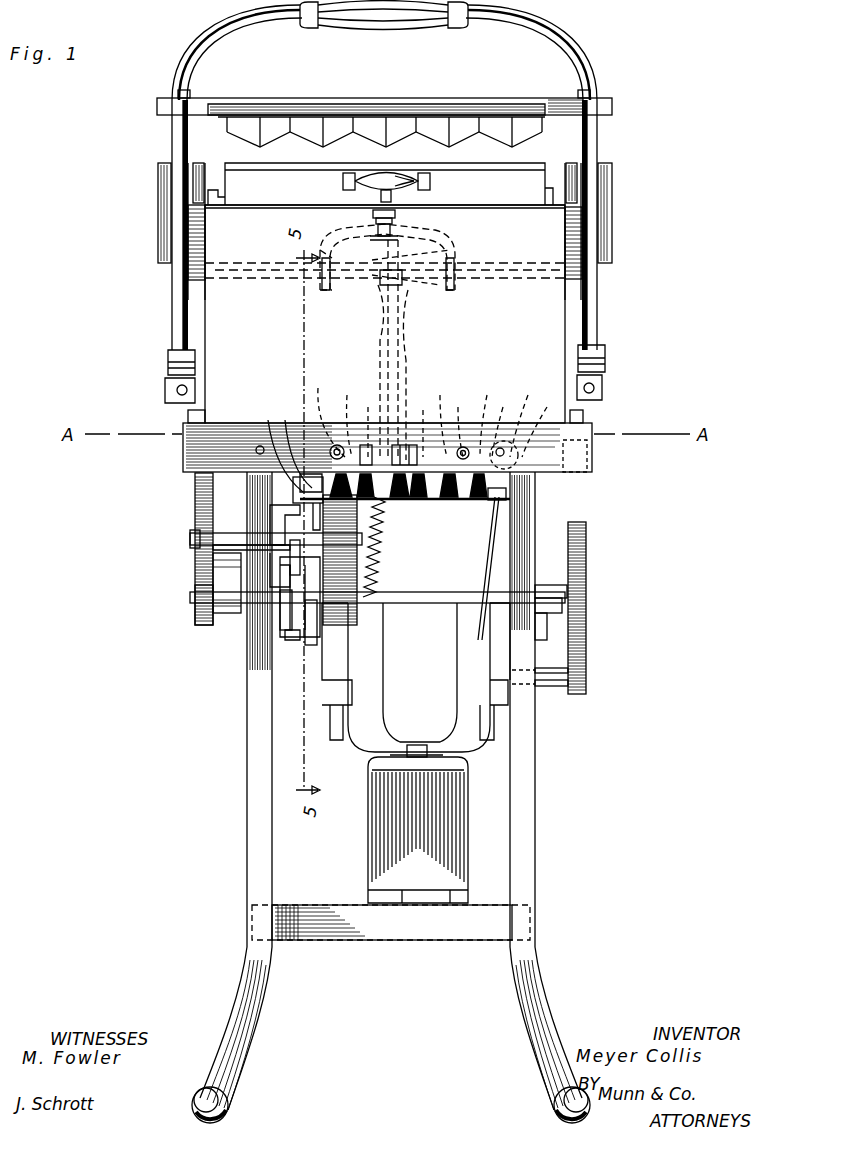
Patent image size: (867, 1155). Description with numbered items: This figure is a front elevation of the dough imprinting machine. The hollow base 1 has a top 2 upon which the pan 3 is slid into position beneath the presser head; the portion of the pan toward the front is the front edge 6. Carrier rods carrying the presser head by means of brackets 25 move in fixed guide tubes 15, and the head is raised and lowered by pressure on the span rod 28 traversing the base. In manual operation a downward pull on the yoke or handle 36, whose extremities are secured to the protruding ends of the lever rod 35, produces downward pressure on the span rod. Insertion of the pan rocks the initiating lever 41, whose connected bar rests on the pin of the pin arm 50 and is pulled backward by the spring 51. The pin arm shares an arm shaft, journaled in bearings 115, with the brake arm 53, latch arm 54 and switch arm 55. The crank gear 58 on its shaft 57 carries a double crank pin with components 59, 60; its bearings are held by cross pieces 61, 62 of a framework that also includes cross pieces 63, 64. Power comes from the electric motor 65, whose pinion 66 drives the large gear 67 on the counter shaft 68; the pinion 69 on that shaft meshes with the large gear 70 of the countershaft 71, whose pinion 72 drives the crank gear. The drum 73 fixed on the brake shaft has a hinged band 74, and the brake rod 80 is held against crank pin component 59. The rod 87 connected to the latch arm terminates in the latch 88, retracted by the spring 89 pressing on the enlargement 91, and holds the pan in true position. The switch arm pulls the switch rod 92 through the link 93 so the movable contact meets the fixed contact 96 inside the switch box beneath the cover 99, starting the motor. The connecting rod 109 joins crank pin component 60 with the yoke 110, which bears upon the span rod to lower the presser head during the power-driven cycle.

The hollow base 1 is at (548, 306).
The top 2 is at (555, 217).
The pan 3 is at (557, 182).
The front edge 6 is at (539, 176).
The fixed guide tubes 15 is at (158, 213).
The brackets 25 is at (603, 107).
The span rod 28 is at (540, 270).
The lever rod 35 is at (606, 357).
The yoke or handle 36 is at (568, 52).
The initiating lever 41 is at (408, 375).
The pin arm 50 is at (369, 424).
The spring 51 is at (392, 513).
The brake arm 53 is at (275, 440).
The latch arm 54 is at (414, 428).
The switch arm 55 is at (464, 425).
The shaft 57 is at (372, 542).
The crank gear 58 is at (358, 570).
The crank pin component 59 is at (293, 492).
The crank pin component 60 is at (358, 420).
The cross piece 61 is at (275, 562).
The cross piece 62 is at (213, 560).
The cross piece 63 is at (497, 500).
The cross piece 64 is at (543, 600).
The electric motor 65 is at (468, 735).
The pinion 66 is at (570, 687).
The large gear 67 is at (590, 642).
The counter shaft 68 is at (425, 594).
The pinion 69 is at (195, 618).
The large gear 70 is at (195, 506).
The countershaft 71 is at (200, 538).
The pinion 72 is at (360, 285).
The drum 73 is at (305, 628).
The hinged band 74 is at (300, 640).
The brake rod 80 is at (328, 452).
The rod 87 is at (402, 340).
The latch 88 is at (398, 204).
The spring 89 is at (455, 243).
The enlargement 91 is at (450, 290).
The switch rod 92 is at (540, 424).
The link 93 is at (491, 415).
The fixed contact 96 is at (504, 430).
The cover 99 is at (525, 415).
The connecting rod 109 is at (378, 328).
The yoke 110 is at (464, 189).
The bearings 115 is at (392, 409).